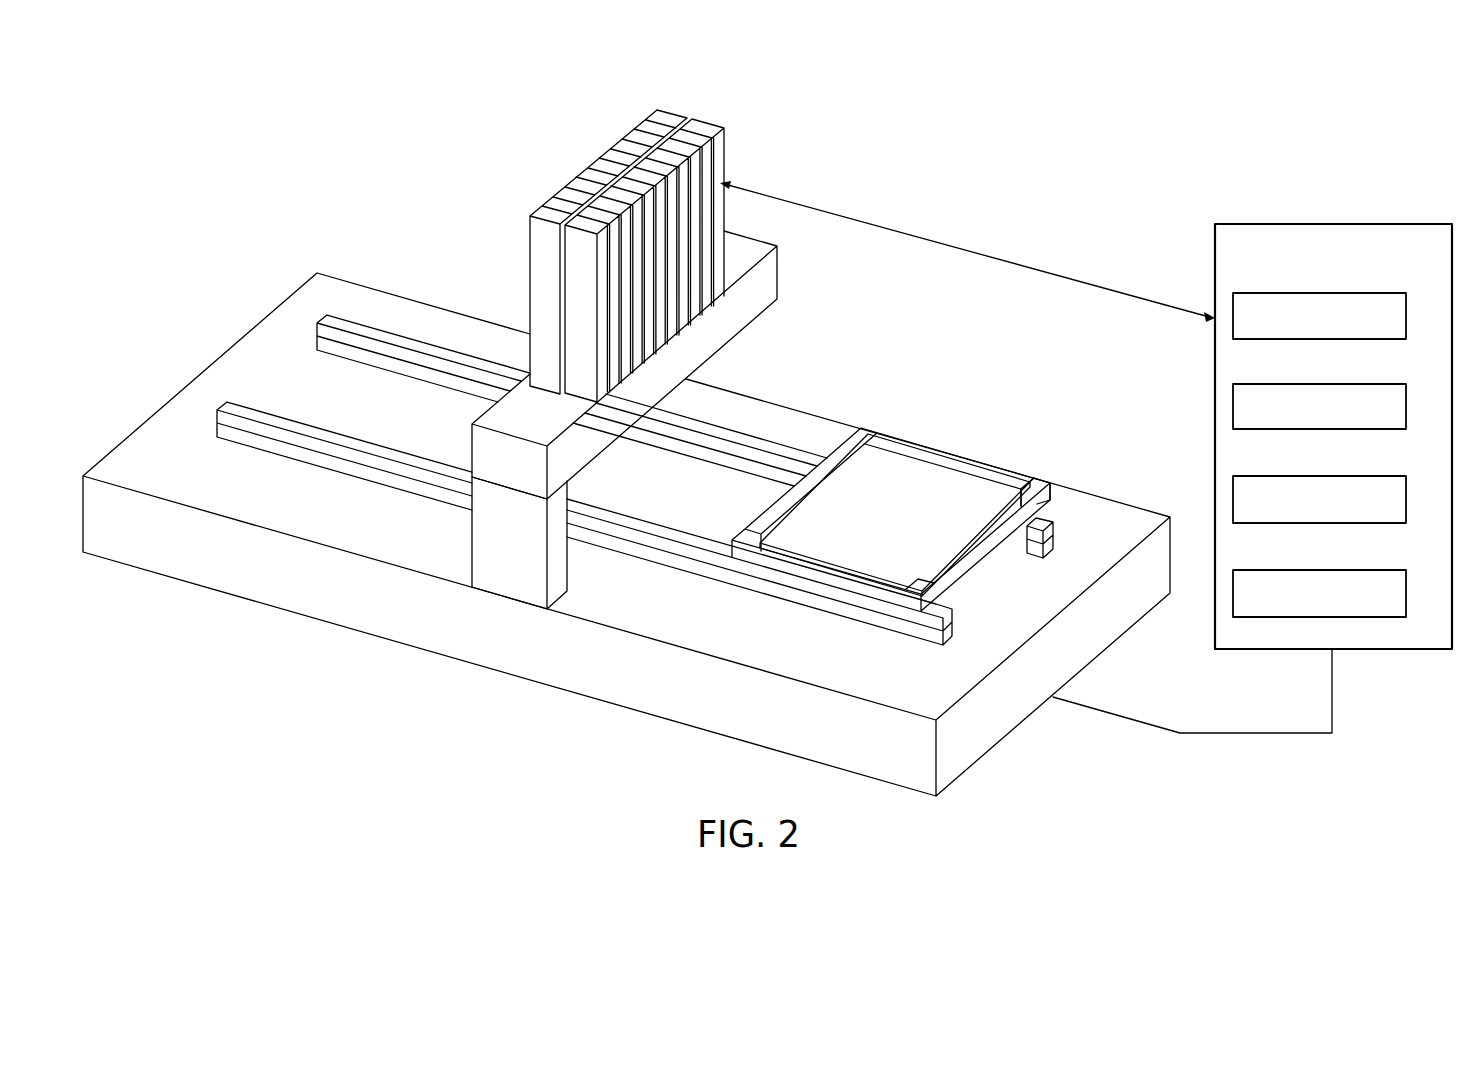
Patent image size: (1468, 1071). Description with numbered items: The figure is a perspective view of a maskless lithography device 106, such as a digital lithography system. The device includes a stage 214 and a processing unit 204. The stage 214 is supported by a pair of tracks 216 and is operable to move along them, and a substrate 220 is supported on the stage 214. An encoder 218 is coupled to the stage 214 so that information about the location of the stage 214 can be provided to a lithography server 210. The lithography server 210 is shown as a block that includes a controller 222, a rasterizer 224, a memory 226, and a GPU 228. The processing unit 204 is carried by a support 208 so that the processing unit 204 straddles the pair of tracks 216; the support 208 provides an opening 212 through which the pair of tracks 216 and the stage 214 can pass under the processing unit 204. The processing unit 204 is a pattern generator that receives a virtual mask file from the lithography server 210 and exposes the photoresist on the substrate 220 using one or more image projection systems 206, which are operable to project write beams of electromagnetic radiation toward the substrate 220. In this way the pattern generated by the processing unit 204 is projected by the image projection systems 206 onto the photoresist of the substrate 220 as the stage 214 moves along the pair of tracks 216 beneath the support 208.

The maskless lithography device 106 is at (885, 131).
The processing unit 204 is at (673, 240).
The image projection systems 206 is at (717, 160).
The support 208 is at (757, 300).
The lithography server 210 is at (1351, 253).
The opening 212 is at (715, 390).
The stage 214 is at (916, 500).
The pair of tracks 216 is at (383, 362).
The encoder 218 is at (1058, 487).
The substrate 220 is at (912, 523).
The controller 222 is at (1390, 293).
The rasterizer 224 is at (1390, 384).
The memory 226 is at (1390, 476).
The GPU 228 is at (1390, 570).